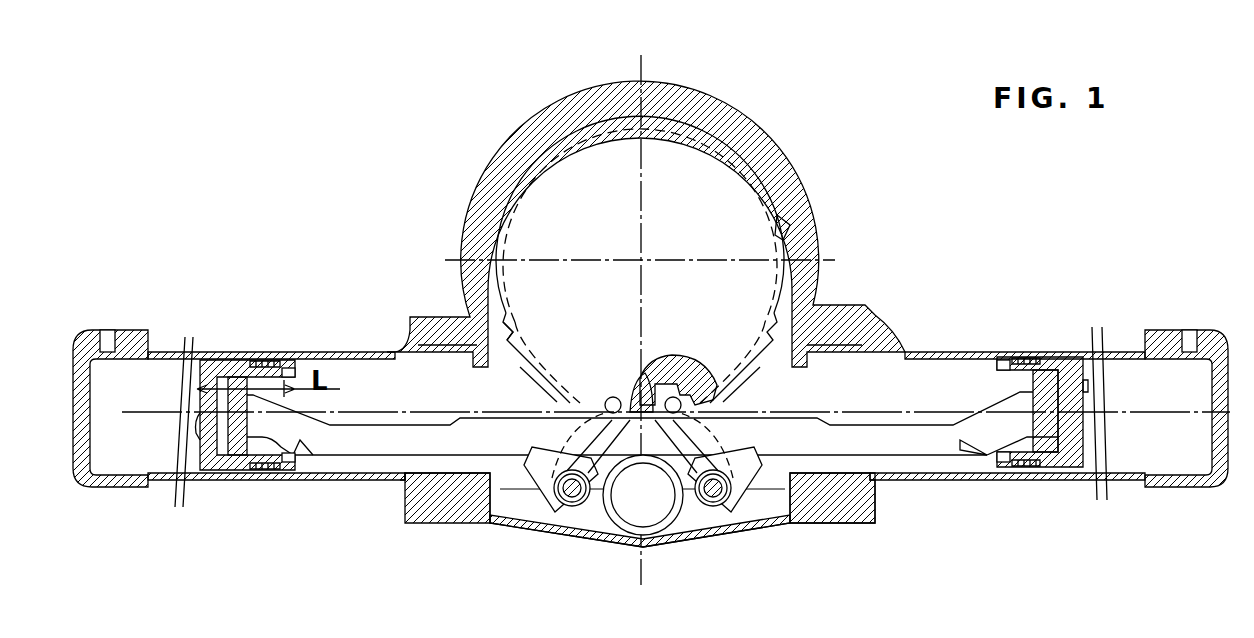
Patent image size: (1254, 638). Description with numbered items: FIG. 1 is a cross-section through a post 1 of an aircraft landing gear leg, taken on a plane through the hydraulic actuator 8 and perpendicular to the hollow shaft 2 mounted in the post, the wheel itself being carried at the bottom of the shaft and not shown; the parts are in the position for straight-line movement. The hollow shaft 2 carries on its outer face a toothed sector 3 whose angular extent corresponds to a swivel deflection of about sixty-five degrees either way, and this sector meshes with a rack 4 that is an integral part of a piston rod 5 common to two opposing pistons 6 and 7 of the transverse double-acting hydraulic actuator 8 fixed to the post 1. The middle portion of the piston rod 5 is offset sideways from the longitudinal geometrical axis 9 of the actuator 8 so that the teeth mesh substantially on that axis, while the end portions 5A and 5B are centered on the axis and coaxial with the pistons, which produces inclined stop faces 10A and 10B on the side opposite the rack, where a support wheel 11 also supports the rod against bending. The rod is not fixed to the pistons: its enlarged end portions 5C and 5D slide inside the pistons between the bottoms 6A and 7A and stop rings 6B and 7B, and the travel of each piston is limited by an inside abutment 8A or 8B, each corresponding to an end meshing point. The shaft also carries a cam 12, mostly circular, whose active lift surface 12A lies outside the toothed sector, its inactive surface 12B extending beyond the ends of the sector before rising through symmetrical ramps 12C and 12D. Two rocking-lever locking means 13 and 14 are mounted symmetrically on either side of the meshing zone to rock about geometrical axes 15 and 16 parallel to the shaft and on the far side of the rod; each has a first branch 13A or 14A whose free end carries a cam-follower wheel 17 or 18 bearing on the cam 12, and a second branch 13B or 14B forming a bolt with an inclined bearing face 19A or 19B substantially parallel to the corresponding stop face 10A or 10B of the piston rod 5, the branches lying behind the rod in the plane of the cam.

The post 1 is at (592, 84).
The hollow shaft 2 is at (668, 108).
The toothed sector 3 is at (818, 261).
The rack 4 is at (620, 400).
The piston rod 5 is at (413, 433).
The end portion 5A is at (258, 424).
The end portion 5B is at (1030, 397).
The enlarged end portion 5C is at (237, 372).
The enlarged end portion 5D is at (1060, 380).
The piston 6 is at (242, 473).
The bottom 6A is at (197, 450).
The stop ring 6B is at (291, 372).
The piston 7 is at (1051, 467).
The bottom 7A is at (1093, 468).
The stop ring 7B is at (993, 360).
The hydraulic actuator 8 is at (908, 301).
The inside abutment 8A is at (466, 322).
The inside abutment 8B is at (810, 320).
The longitudinal geometrical axis 9 is at (1157, 408).
The stop face 10A is at (294, 444).
The stop face 10B is at (961, 441).
The support wheel 11 is at (665, 520).
The cam 12 is at (528, 140).
The active lift surface 12A is at (508, 180).
The inactive surface 12B is at (817, 226).
The ramp 12C is at (503, 253).
The ramp 12D is at (783, 215).
The locking means 13 is at (593, 512).
The first branch 13A is at (600, 410).
The second branch 13B is at (537, 474).
The locking means 14 is at (693, 512).
The first branch 14A is at (684, 408).
The second branch 14B is at (747, 478).
The geometrical axis 15 is at (571, 496).
The geometrical axis 16 is at (712, 497).
The cam-follower wheel 17 is at (610, 392).
The cam-follower wheel 18 is at (668, 392).
The bearing face 19A is at (540, 478).
The bearing face 19B is at (748, 476).